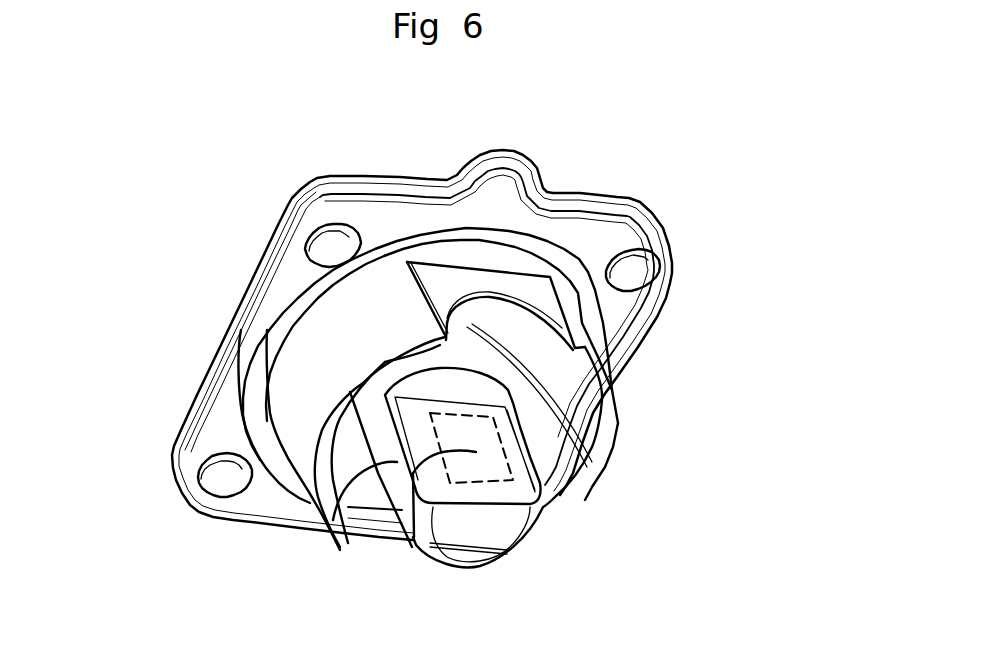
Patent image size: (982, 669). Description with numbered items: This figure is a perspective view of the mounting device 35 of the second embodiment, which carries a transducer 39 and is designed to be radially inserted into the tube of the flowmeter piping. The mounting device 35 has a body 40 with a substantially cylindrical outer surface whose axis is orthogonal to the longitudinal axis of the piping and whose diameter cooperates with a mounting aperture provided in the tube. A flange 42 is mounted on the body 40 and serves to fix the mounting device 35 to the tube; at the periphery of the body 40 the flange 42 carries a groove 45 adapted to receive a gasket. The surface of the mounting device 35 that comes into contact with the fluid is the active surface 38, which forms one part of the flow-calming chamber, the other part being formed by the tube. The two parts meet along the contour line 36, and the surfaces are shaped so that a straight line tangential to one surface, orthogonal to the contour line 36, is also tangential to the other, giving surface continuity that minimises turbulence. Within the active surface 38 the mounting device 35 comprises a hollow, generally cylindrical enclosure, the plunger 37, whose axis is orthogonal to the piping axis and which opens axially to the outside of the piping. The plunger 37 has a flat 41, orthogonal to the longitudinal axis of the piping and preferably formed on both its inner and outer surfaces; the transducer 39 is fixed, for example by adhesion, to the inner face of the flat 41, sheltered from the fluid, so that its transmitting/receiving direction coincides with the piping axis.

The mounting device 35 is at (585, 112).
The contour line 36 is at (538, 310).
The plunger 37 is at (343, 547).
The active surface 38 is at (545, 400).
The transducer 39 is at (413, 543).
The body 40 is at (333, 345).
The flat 41 is at (526, 484).
The flange 42 is at (610, 237).
The groove 45 is at (267, 440).